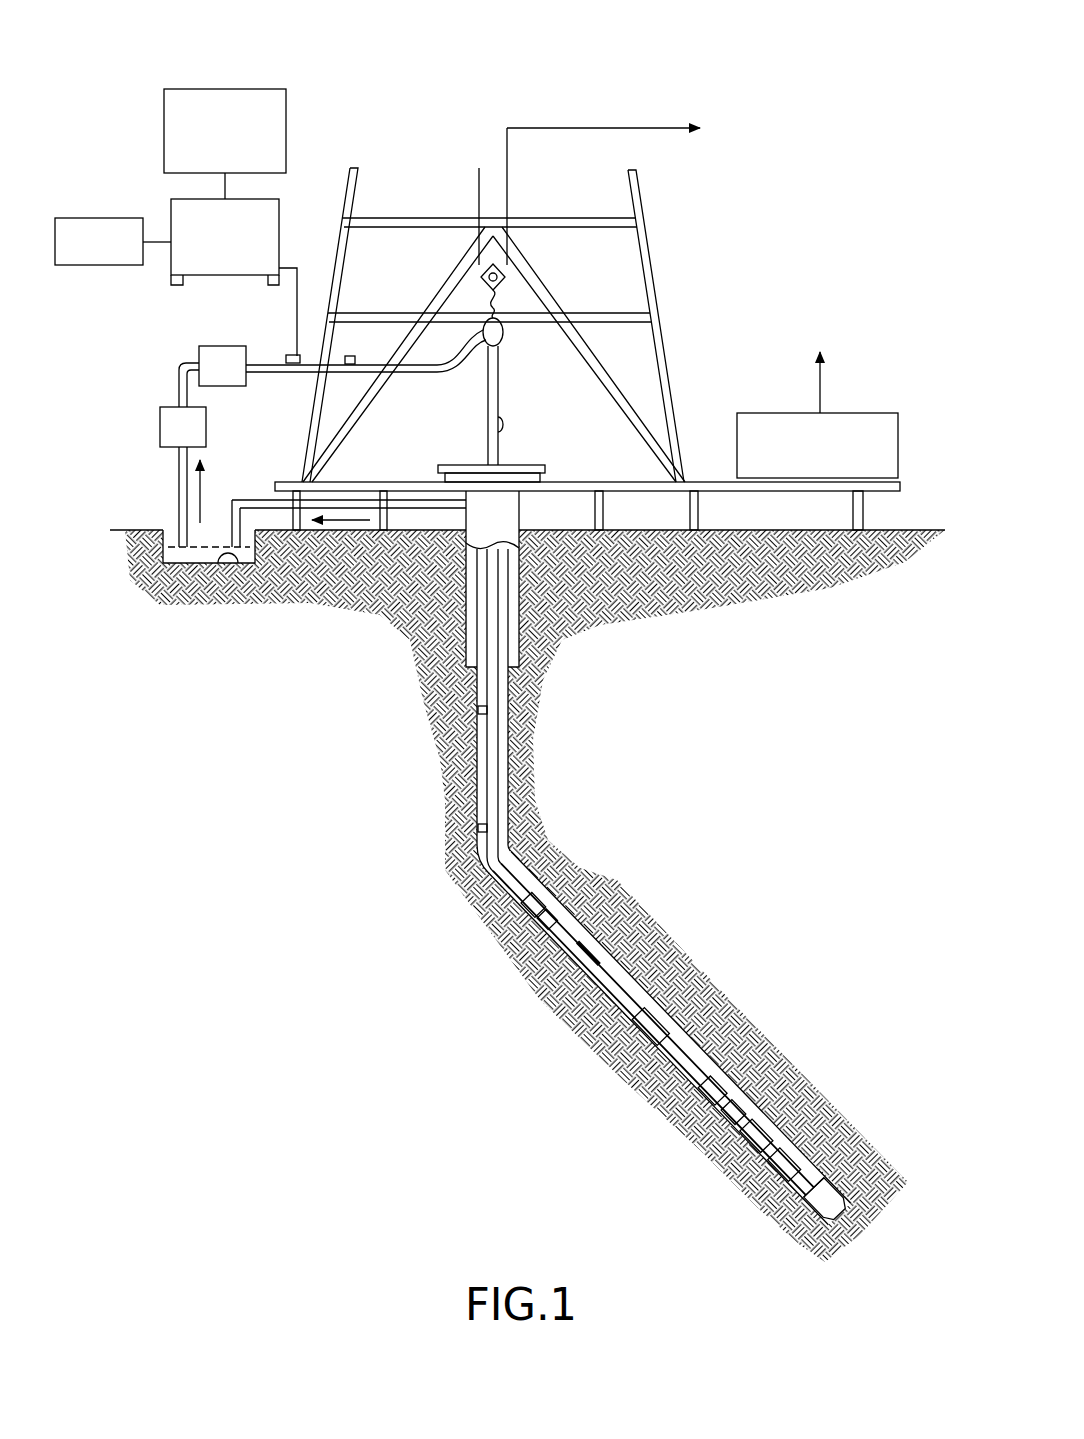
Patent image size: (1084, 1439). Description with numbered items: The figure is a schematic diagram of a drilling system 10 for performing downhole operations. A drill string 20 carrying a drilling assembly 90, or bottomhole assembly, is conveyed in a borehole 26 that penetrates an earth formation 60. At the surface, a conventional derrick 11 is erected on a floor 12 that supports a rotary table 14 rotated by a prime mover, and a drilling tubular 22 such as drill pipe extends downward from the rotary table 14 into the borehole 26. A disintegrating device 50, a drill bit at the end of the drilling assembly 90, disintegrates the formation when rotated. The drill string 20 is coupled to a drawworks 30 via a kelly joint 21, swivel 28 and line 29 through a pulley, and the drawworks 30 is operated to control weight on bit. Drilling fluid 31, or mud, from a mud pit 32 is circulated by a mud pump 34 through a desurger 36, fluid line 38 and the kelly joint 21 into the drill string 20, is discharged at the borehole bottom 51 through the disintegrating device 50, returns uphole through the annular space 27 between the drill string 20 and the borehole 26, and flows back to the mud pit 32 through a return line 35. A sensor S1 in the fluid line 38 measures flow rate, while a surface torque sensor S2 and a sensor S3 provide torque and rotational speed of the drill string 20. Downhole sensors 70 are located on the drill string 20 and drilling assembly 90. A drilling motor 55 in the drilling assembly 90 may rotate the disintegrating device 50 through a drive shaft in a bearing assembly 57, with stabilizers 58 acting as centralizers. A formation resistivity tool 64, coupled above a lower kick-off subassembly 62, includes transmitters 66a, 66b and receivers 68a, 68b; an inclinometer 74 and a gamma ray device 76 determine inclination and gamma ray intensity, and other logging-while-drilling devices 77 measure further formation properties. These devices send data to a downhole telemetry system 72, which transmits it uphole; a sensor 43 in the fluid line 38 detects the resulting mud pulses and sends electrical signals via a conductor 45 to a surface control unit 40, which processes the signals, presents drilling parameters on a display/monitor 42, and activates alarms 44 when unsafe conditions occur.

The drilling system 10 is at (412, 144).
The derrick 11 is at (664, 334).
The floor 12 is at (684, 480).
The rotary table 14 is at (507, 466).
The drill string 20 is at (506, 688).
The kelly joint 21 is at (499, 390).
The drilling tubular 22 is at (477, 737).
The borehole 26 is at (514, 850).
The annular space 27 is at (528, 886).
The swivel 28 is at (480, 347).
The line 29 is at (508, 198).
The drawworks 30 is at (860, 413).
The drilling fluid 31 is at (170, 566).
The mud pit 32 is at (224, 553).
The mud pump 34 is at (160, 425).
The return line 35 is at (420, 510).
The desurger 36 is at (199, 360).
The fluid line 38 is at (296, 374).
The surface control unit 40 is at (171, 212).
The display/monitor 42 is at (200, 88).
The sensor 43 is at (292, 358).
The alarms 44 is at (76, 266).
The conductor 45 is at (289, 268).
The disintegrating device 50 is at (870, 1195).
The borehole bottom 51 is at (830, 1256).
The drilling motor 55 is at (657, 986).
The bearing assembly 57 is at (763, 1188).
The stabilizers 58 is at (672, 1022).
The earth formation 60 is at (326, 943).
The lower kick-off subassembly 62 is at (820, 1130).
The formation resistivity tool 64 is at (712, 1115).
The transmitter 66a is at (656, 1044).
The transmitter 66b is at (740, 1150).
The receiver 68a is at (695, 1095).
The receiver 68b is at (742, 1060).
The downhole sensors 70 is at (540, 924).
The downhole telemetry system 72 is at (487, 797).
The inclinometer 74 is at (760, 1105).
The gamma ray device 76 is at (800, 1115).
The logging-while-drilling devices 77 is at (574, 973).
The drilling assembly 90 is at (634, 938).
The sensor S1 is at (350, 355).
The surface torque sensor S2 is at (488, 421).
The sensor S3 is at (545, 471).